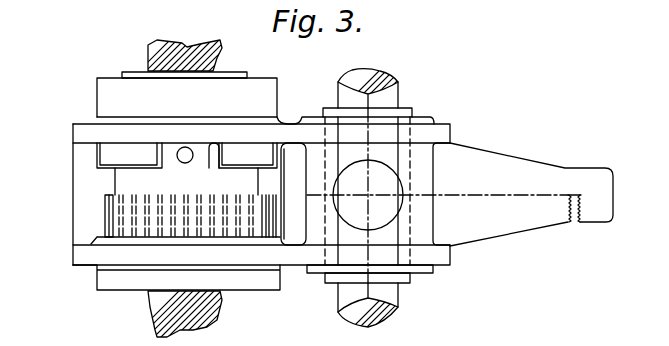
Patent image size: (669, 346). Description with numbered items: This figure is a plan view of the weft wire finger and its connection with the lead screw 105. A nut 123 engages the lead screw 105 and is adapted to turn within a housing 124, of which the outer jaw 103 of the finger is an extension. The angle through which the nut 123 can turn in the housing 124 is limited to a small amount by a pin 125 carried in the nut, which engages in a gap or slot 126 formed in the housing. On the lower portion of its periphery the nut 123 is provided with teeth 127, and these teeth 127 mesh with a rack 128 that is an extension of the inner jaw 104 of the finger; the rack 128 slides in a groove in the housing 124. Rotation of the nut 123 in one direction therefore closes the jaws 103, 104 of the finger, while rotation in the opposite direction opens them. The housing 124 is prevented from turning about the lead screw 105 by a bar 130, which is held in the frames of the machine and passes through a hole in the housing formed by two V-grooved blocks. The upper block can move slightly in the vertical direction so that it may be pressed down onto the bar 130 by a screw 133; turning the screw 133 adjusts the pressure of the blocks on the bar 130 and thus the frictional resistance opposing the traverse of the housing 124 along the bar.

The outer jaw 103 is at (598, 177).
The inner jaw 104 is at (553, 210).
The lead screw 105 is at (150, 50).
The nut 123 is at (105, 280).
The housing 124 is at (85, 251).
The pin 125 is at (183, 147).
The gap or slot 126 is at (203, 152).
The teeth 127 is at (213, 233).
The rack 128 is at (105, 207).
The bar 130 is at (382, 73).
The screw 133 is at (390, 187).